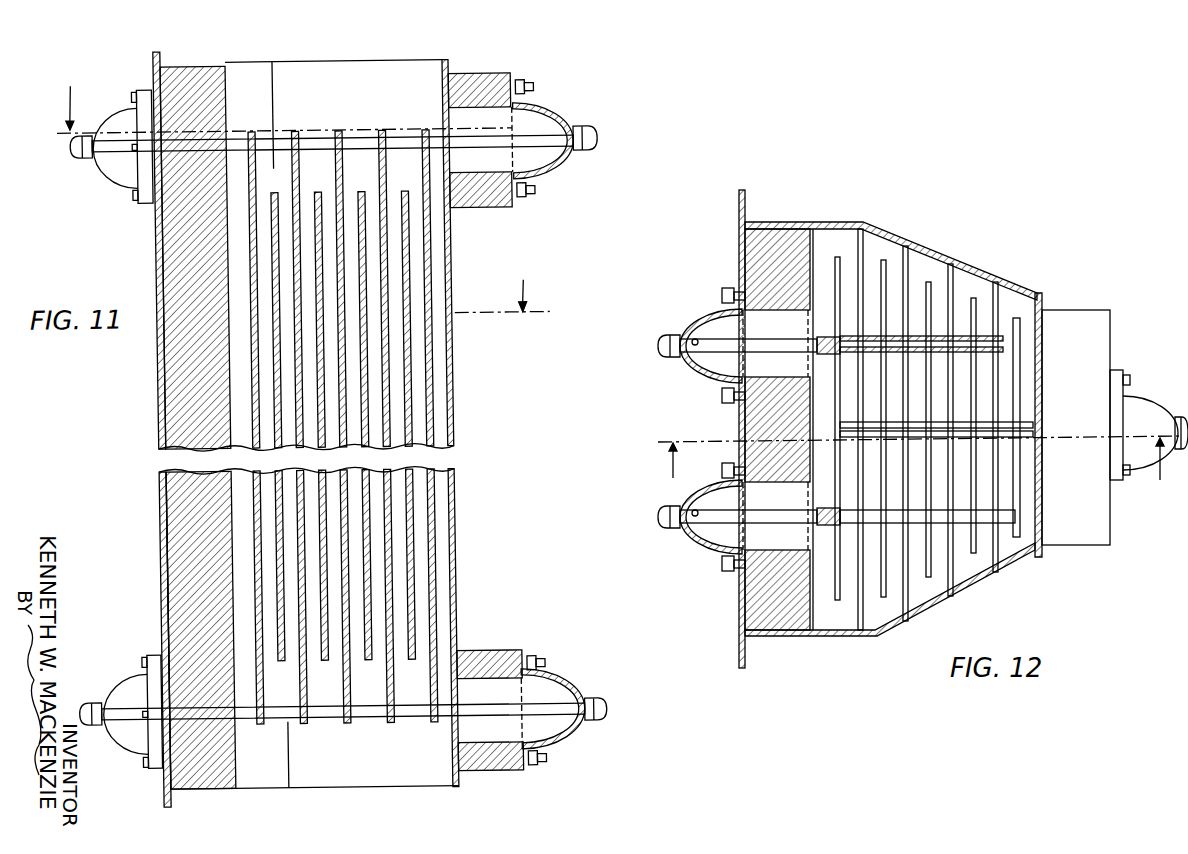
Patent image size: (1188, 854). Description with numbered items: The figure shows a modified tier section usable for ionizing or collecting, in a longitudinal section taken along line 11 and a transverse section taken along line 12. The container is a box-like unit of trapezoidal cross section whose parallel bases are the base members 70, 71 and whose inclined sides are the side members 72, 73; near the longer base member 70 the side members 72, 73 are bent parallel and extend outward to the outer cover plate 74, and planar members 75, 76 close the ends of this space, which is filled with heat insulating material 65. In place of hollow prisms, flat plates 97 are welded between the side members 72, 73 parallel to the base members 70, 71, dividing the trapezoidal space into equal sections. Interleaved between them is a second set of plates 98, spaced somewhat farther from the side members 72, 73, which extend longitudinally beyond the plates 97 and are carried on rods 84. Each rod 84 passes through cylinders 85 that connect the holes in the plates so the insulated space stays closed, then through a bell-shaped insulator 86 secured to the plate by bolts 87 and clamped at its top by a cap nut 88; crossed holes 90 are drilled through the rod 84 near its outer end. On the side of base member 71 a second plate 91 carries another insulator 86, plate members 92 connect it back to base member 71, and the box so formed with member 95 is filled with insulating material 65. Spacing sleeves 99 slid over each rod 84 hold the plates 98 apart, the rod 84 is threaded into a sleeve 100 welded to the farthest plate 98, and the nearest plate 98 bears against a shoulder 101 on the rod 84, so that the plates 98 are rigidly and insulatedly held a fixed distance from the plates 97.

In FIG. 12, the section line 11— 11 is at (919, 472).
In FIG. 11, the section line 12— 12 is at (305, 186).
In FIG. 11, the heat insulating material 65 is at (179, 372).
In FIG. 12, the heat insulating material 65 is at (768, 597).
In FIG. 12, the base member 70 is at (818, 603).
In FIG. 12, the base member 71 is at (1043, 522).
In FIG. 12, the side member 72 is at (960, 593).
In FIG. 11, the side member 73 is at (261, 765).
In FIG. 12, the side member 73 is at (972, 268).
In FIG. 11, the outer cover plate 74 is at (157, 502).
In FIG. 12, the outer cover plate 74 is at (747, 415).
In FIG. 11, the planar member 75 is at (198, 790).
In FIG. 11, the planar member 76 is at (175, 76).
In FIG. 11, the rod 84 is at (361, 144).
In FIG. 12, the rod 84 is at (720, 347).
In FIG. 11, the cylinder 85 is at (481, 113).
In FIG. 12, the cylinder 85 is at (787, 310).
In FIG. 11, the bell-shaped insulator 86 is at (546, 109).
In FIG. 12, the bell-shaped insulator 86 is at (702, 315).
In FIG. 11, the bolt 87 is at (130, 195).
In FIG. 11, the cap nut 88 is at (71, 141).
In FIG. 12, the cap nut 88 is at (660, 347).
In FIG. 12, the crossed hole 90 is at (690, 337).
In FIG. 11, the second plate 91 is at (514, 86).
In FIG. 12, the plate member 92 is at (1068, 318).
In FIG. 11, the box member 95 is at (469, 79).
In FIG. 11, the flat plate 97 is at (312, 197).
In FIG. 12, the flat plate 97 is at (940, 275).
In FIG. 11, the plate 98 is at (290, 131).
In FIG. 12, the plate 98 is at (882, 260).
In FIG. 12, the spacing sleeve 99 is at (897, 333).
In FIG. 12, the threaded sleeve 100 is at (1000, 337).
In FIG. 12, the shoulder 101 is at (830, 337).